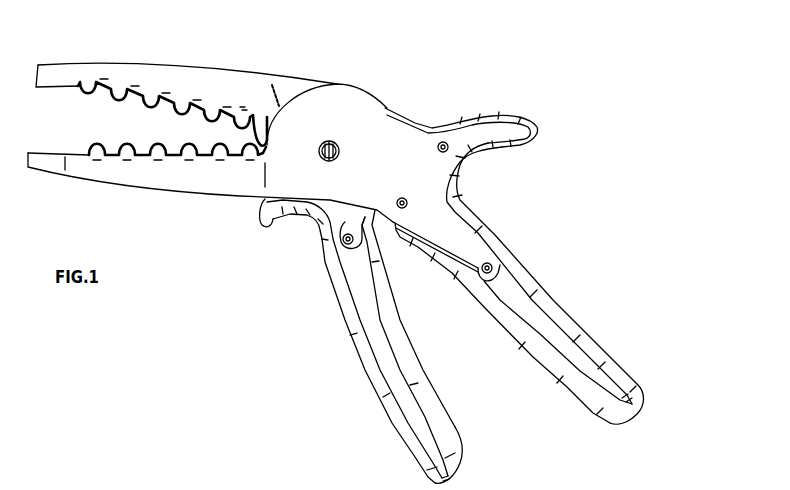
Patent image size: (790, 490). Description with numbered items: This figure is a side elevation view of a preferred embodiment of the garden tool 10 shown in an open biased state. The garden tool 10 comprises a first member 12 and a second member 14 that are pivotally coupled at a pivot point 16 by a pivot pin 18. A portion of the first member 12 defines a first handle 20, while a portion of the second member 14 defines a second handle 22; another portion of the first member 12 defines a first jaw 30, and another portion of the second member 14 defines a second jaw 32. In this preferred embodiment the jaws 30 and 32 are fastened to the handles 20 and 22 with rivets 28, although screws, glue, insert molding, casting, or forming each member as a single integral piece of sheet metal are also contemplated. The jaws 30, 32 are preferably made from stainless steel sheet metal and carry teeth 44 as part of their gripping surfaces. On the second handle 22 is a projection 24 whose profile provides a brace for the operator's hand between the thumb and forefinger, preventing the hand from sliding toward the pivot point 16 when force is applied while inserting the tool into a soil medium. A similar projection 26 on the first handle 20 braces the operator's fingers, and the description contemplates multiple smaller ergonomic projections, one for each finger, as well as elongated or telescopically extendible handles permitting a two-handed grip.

The garden tool 10 is at (440, 93).
The first member 12 is at (486, 469).
The second member 14 is at (586, 440).
The pivot point 16 is at (332, 136).
The pivot pin 18 is at (336, 145).
The first handle 20 is at (358, 352).
The second handle 22 is at (552, 303).
The projection 24 is at (544, 140).
The projection 26 is at (261, 230).
The rivets 28 is at (347, 242).
The first jaw 30 is at (200, 68).
The second jaw 32 is at (152, 185).
The teeth 44 is at (192, 138).